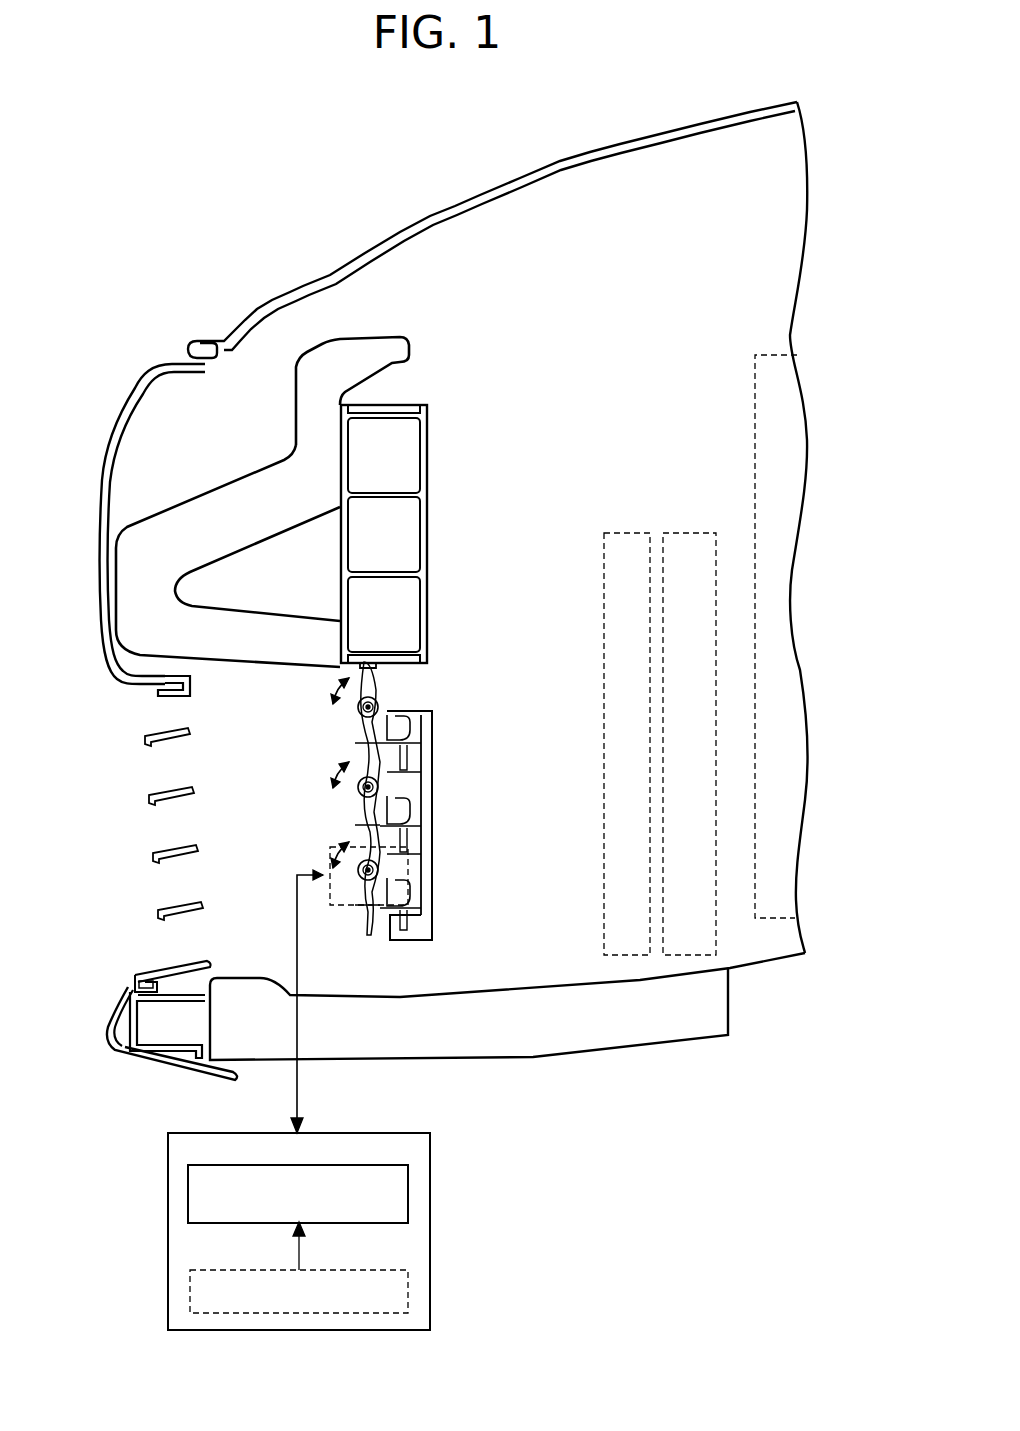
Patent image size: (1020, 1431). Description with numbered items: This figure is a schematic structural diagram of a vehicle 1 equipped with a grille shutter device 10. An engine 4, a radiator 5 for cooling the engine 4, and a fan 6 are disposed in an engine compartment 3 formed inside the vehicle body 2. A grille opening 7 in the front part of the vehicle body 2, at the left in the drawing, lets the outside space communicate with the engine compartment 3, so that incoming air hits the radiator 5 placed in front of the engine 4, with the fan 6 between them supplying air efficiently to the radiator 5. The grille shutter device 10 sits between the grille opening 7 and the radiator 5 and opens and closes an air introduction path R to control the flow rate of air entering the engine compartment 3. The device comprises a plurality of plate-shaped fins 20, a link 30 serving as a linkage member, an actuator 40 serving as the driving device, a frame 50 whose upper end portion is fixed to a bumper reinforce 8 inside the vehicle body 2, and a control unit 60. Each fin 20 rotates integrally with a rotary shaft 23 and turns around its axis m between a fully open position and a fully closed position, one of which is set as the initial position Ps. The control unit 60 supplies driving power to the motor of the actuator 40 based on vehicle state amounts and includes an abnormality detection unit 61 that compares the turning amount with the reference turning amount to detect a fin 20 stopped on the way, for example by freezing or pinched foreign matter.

The vehicle 1 is at (172, 180).
The vehicle body 2 is at (684, 128).
The engine compartment 3 is at (696, 215).
The engine 4 is at (765, 350).
The radiator 5 is at (625, 533).
The fan 6 is at (690, 533).
The grille opening 7 is at (102, 726).
The bumper reinforce 8 is at (428, 450).
The grille shutter device 10 is at (250, 740).
The fin 20 is at (372, 662).
The rotary shaft 23 is at (358, 728).
The link 30 is at (432, 710).
The actuator 40 is at (336, 905).
The frame 50 is at (400, 664).
The control unit 60 is at (340, 1133).
The abnormality detection unit 61 is at (322, 1165).
The axis m is at (382, 696).
The air introduction path R is at (255, 913).
The initial position Ps is at (365, 672).